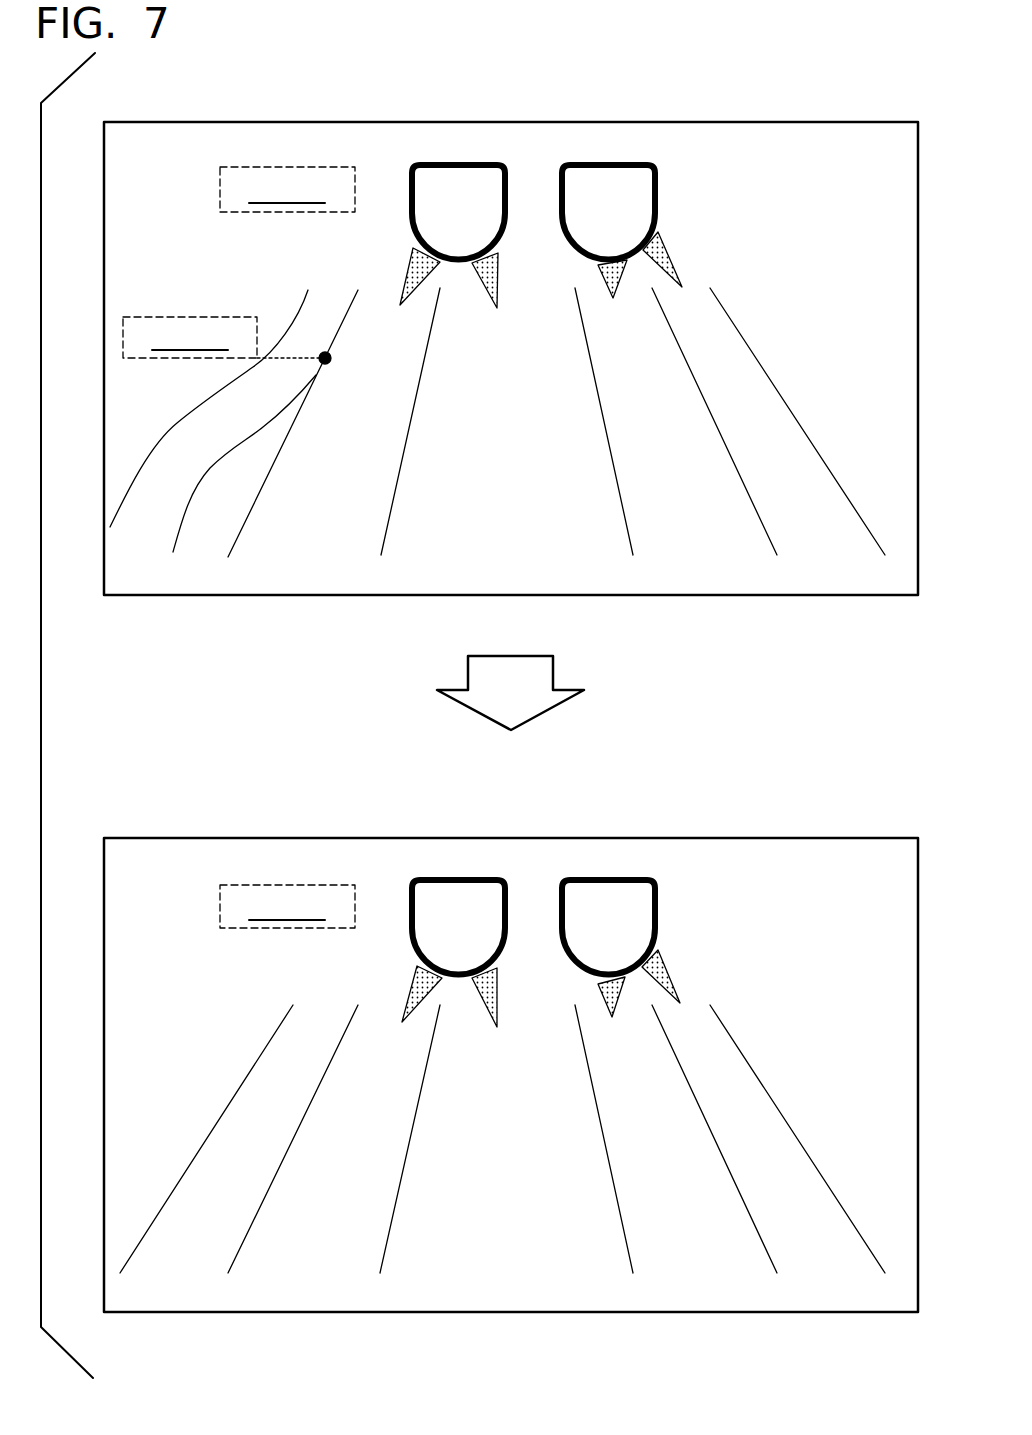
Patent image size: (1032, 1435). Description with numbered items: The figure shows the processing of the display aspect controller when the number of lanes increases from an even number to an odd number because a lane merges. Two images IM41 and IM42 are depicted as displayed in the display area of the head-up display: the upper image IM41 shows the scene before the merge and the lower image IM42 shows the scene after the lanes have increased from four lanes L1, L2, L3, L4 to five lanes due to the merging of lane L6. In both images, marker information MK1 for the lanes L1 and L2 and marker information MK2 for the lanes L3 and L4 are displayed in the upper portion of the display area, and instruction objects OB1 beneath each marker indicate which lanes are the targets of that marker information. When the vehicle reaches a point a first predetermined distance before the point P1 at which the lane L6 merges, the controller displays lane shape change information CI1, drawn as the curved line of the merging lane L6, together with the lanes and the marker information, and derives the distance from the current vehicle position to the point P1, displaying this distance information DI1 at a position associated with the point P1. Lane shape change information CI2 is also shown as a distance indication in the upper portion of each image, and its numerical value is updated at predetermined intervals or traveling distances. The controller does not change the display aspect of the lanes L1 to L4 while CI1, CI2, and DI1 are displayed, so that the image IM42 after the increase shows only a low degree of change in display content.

The marker information MK1 is at (468, 140).
The marker information MK2 is at (609, 140).
The image IM41 is at (851, 122).
The image IM42 is at (851, 838).
The instruction objects OB1 is at (376, 255).
The lane shape change information CI1 is at (170, 415).
The lane shape change information CI2 is at (218, 190).
The distance information DI1 is at (188, 317).
The point P1 is at (331, 358).
The lane L1 is at (292, 558).
The lane L2 is at (491, 558).
The lane L3 is at (689, 558).
The lane L4 is at (811, 558).
The lane L6 is at (139, 524).